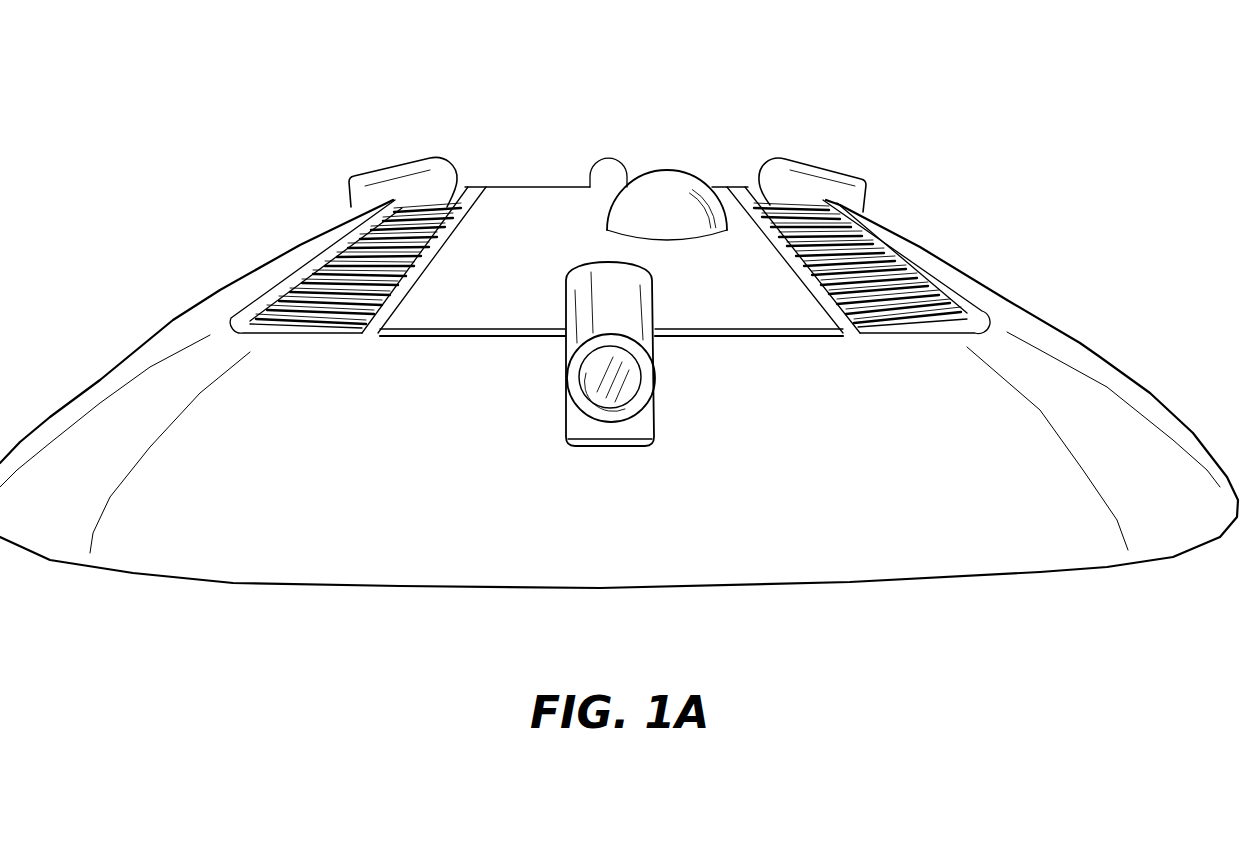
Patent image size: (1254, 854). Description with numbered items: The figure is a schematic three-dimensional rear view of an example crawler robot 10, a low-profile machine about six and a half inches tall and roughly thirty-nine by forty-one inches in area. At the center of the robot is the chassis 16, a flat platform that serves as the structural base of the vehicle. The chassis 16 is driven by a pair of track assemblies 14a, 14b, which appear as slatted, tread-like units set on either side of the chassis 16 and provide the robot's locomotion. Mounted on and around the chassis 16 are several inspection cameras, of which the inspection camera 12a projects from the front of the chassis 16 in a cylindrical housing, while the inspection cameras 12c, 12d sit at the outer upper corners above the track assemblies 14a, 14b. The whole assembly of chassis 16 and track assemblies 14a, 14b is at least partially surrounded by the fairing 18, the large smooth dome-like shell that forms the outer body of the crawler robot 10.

The crawler robot 10 is at (1108, 300).
The inspection camera 12a is at (597, 295).
The inspection camera 12c is at (818, 177).
The inspection camera 12d is at (397, 180).
The track assembly 14a is at (857, 268).
The track assembly 14b is at (357, 257).
The chassis 16 is at (548, 228).
The fairing 18 is at (950, 513).